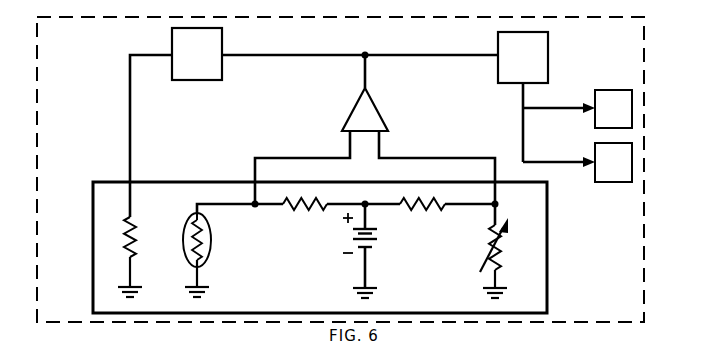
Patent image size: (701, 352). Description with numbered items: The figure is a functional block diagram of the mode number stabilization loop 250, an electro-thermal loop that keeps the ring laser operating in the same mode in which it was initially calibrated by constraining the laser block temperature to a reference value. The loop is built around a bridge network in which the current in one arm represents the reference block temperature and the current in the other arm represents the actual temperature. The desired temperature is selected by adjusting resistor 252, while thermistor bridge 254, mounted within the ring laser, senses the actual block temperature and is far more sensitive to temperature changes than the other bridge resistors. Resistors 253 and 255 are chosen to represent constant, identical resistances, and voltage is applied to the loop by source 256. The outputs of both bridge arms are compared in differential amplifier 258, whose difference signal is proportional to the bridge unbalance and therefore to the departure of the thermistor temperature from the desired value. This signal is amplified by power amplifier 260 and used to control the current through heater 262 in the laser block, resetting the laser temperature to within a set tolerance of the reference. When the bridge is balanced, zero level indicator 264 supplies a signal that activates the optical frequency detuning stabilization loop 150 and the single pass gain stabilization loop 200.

The optical frequency detuning stabilization loop 150 is at (577, 109).
The single pass gain stabilization loop 200 is at (577, 162).
The mode number stabilization loop 250 is at (340, 169).
The resistor 252 is at (506, 251).
The resistor 253 is at (422, 215).
The thermistor bridge 254 is at (212, 255).
The resistor 255 is at (305, 215).
The source 256 is at (373, 251).
The differential amplifier 258 is at (365, 109).
The power amplifier 260 is at (197, 54).
The heater 262 is at (143, 257).
The zero level indicator 264 is at (523, 57).